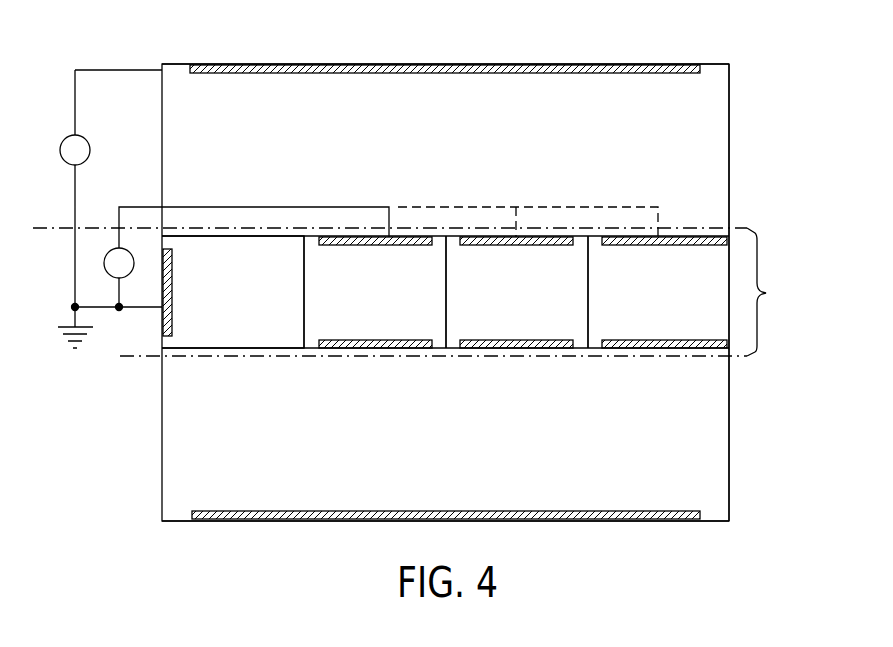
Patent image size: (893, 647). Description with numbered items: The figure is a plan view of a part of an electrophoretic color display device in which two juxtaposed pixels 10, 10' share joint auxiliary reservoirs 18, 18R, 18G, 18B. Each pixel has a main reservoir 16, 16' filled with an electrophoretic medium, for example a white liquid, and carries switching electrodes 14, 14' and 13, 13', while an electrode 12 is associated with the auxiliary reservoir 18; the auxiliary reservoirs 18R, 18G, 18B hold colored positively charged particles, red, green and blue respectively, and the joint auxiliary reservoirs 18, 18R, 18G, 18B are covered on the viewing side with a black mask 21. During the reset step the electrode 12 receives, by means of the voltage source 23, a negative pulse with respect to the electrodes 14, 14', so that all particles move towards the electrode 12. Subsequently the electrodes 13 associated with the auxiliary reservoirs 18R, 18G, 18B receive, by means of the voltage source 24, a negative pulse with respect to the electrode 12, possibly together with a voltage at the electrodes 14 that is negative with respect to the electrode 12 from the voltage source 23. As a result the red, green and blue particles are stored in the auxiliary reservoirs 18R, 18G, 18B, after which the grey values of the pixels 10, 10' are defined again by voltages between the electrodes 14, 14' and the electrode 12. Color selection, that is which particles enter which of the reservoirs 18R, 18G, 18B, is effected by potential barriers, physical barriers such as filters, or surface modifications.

The pixel 10 is at (445, 534).
The pixel 10' is at (445, 69).
The switching electrode 12 is at (165, 317).
The switching electrode 13 is at (523, 375).
The switching electrode 13' is at (523, 203).
The switching electrode 14 is at (446, 543).
The switching electrode 14' is at (445, 42).
The main reservoir 16 is at (737, 434).
The main reservoir 16' is at (728, 150).
The auxiliary reservoir 18 is at (231, 285).
The auxiliary reservoir 18R is at (390, 310).
The auxiliary reservoir 18G is at (548, 310).
The auxiliary reservoir 18B is at (683, 312).
The black mask 21 is at (769, 292).
The voltage source 23 is at (82, 146).
The voltage source 24 is at (104, 263).